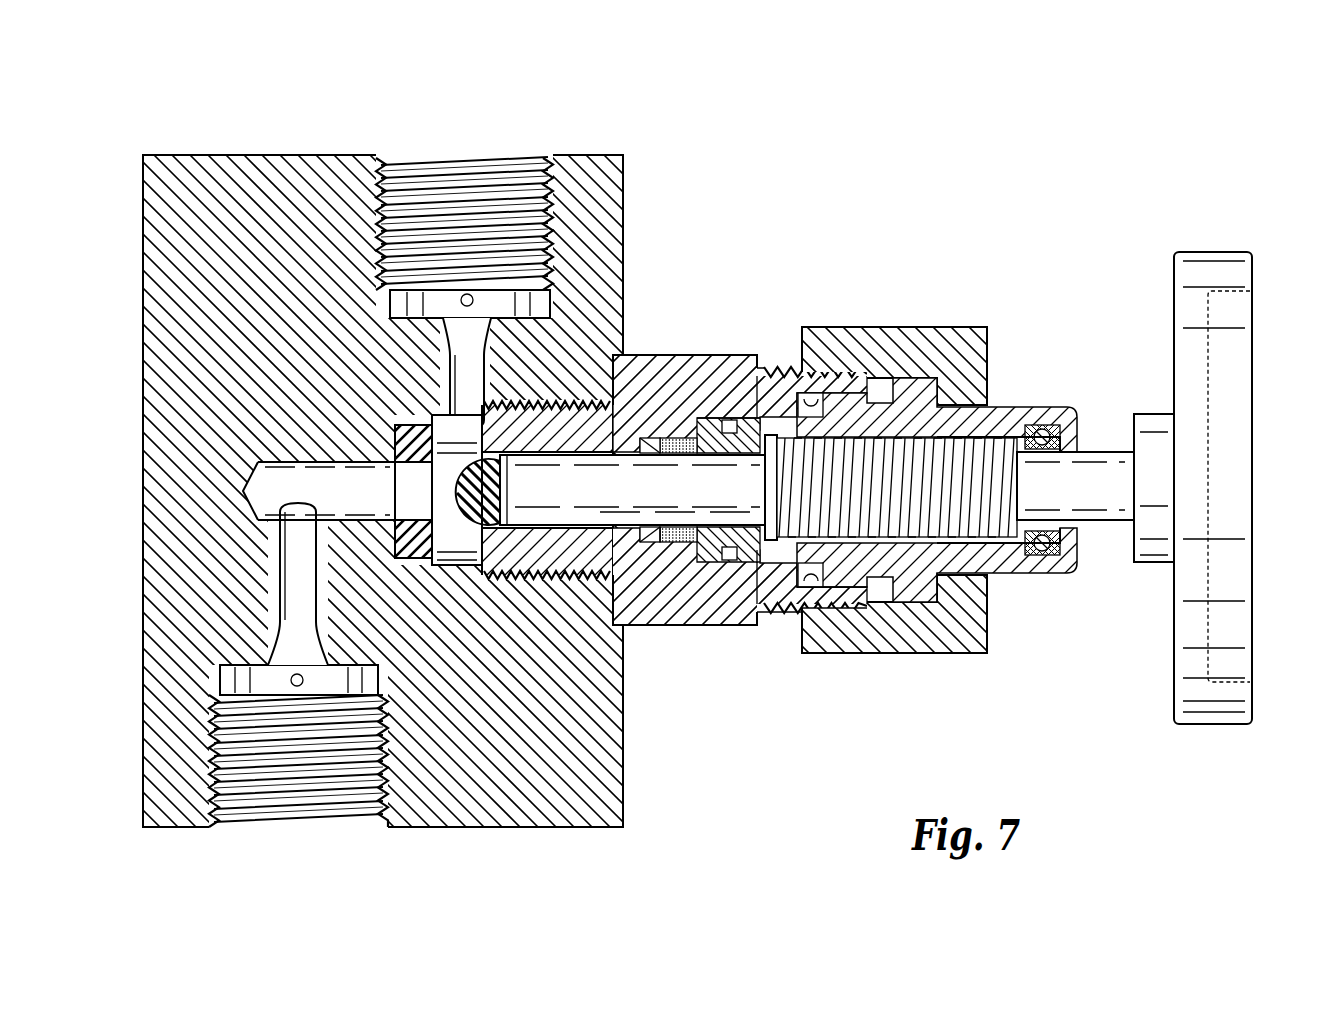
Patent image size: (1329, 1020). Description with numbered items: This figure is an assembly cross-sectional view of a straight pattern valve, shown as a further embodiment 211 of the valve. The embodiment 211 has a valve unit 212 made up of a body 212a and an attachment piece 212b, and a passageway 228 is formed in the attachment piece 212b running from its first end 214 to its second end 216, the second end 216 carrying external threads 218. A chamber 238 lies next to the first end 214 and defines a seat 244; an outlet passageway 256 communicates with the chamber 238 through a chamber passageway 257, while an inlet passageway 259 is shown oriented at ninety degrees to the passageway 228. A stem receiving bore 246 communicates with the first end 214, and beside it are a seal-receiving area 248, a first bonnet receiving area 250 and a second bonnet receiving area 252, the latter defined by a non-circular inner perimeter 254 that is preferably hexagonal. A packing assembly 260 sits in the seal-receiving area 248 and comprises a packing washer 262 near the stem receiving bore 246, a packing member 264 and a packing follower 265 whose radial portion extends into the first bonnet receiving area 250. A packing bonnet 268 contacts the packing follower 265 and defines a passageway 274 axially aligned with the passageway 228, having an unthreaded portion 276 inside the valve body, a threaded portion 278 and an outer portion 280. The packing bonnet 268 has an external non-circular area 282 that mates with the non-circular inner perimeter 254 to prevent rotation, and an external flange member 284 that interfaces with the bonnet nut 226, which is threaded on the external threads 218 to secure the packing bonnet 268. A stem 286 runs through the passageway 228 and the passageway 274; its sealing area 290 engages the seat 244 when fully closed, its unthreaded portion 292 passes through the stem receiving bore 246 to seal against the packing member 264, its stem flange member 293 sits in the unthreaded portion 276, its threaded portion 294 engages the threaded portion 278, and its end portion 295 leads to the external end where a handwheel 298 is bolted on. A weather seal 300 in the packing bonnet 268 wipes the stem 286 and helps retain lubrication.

The valve embodiment 211 is at (940, 116).
The valve unit 212 is at (797, 159).
The body 212a is at (623, 190).
The attachment piece 212b is at (712, 419).
The first end 214 is at (475, 558).
The second end 216 is at (905, 372).
The external threads 218 is at (787, 617).
The bonnet nut 226 is at (945, 335).
The passageway 228 is at (560, 452).
The chamber 238 is at (445, 430).
The seat 244 is at (430, 547).
The stem receiving bore 246 is at (636, 420).
The seal-receiving area 248 is at (727, 560).
The first bonnet receiving area 250 is at (752, 436).
The second bonnet receiving area 252 is at (866, 388).
The non-circular inner perimeter 254 is at (811, 577).
The outlet passageway 256 is at (252, 787).
The chamber passageway 257 is at (283, 498).
The inlet passageway 259 is at (415, 168).
The packing assembly 260 is at (706, 425).
The packing washer 262 is at (643, 625).
The packing member 264 is at (678, 545).
The packing follower 265 is at (762, 420).
The packing bonnet 268 is at (883, 608).
The passageway 274 is at (980, 565).
The unthreaded portion 276 is at (805, 608).
The threaded portion 278 is at (945, 608).
The outer portion 280 is at (1010, 548).
The external non-circular area 282 is at (847, 608).
The external flange member 284 is at (945, 392).
The stem 286 is at (558, 500).
The sealing area 290 is at (466, 522).
The unthreaded portion 292 is at (555, 530).
The stem flange member 293 is at (680, 494).
The threaded portion 294 is at (935, 478).
The end portion 295 is at (1050, 500).
The handwheel 298 is at (1225, 252).
The weather seal 300 is at (1058, 422).